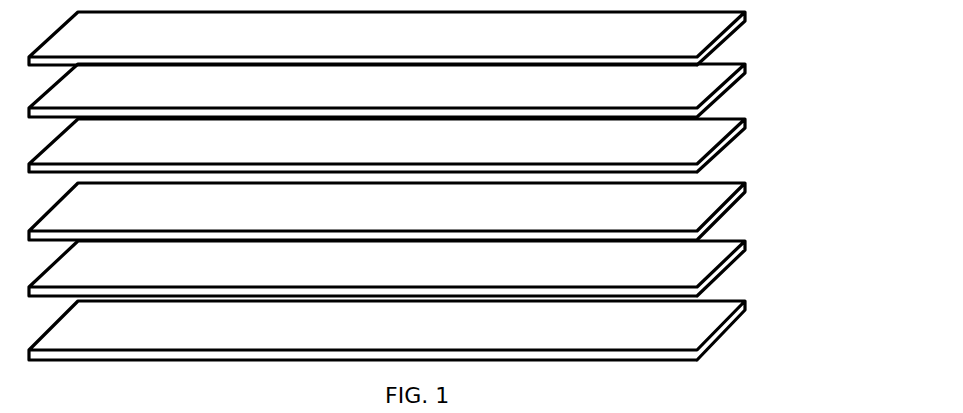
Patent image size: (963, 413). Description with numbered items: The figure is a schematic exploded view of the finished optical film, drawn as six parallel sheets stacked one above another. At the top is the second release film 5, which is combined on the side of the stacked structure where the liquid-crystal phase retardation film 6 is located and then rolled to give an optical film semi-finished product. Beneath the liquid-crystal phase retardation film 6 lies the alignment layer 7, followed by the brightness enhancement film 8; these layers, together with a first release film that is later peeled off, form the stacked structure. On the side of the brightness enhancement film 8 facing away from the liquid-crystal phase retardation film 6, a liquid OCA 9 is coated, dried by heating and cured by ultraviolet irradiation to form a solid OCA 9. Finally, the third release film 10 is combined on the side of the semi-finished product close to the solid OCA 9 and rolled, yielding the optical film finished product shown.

The second release film 5 is at (663, 38).
The liquid-crystal phase retardation film 6 is at (663, 90).
The alignment layer 7 is at (663, 146).
The brightness enhancement film 8 is at (663, 212).
The OCA 9 is at (663, 270).
The third release film 10 is at (663, 330).